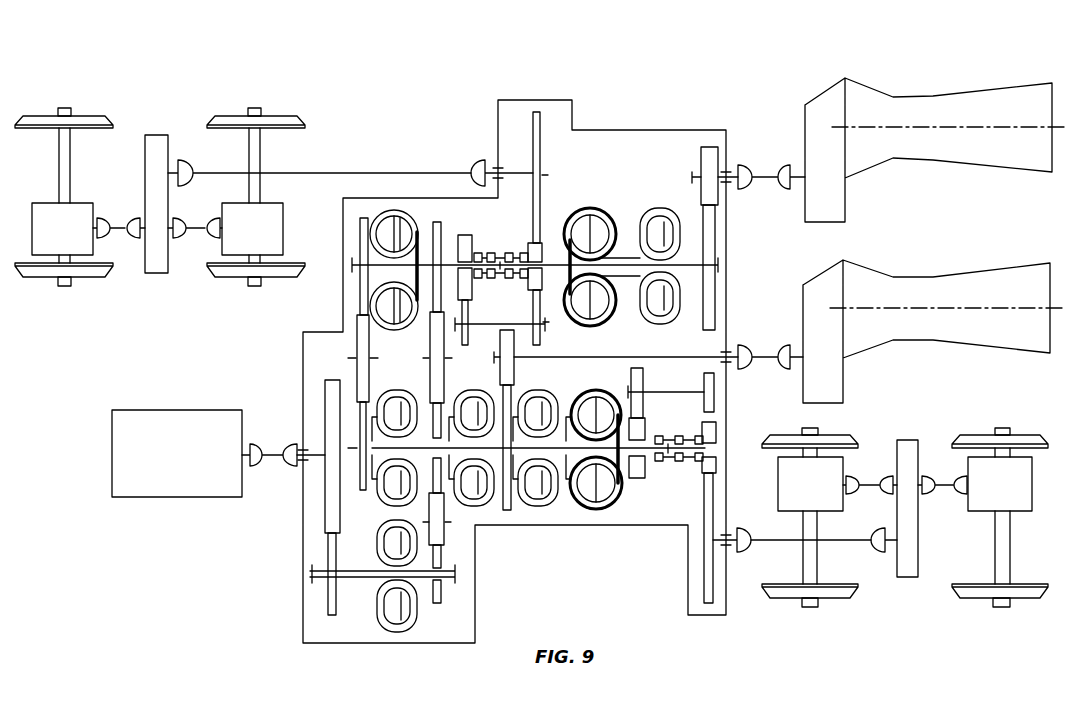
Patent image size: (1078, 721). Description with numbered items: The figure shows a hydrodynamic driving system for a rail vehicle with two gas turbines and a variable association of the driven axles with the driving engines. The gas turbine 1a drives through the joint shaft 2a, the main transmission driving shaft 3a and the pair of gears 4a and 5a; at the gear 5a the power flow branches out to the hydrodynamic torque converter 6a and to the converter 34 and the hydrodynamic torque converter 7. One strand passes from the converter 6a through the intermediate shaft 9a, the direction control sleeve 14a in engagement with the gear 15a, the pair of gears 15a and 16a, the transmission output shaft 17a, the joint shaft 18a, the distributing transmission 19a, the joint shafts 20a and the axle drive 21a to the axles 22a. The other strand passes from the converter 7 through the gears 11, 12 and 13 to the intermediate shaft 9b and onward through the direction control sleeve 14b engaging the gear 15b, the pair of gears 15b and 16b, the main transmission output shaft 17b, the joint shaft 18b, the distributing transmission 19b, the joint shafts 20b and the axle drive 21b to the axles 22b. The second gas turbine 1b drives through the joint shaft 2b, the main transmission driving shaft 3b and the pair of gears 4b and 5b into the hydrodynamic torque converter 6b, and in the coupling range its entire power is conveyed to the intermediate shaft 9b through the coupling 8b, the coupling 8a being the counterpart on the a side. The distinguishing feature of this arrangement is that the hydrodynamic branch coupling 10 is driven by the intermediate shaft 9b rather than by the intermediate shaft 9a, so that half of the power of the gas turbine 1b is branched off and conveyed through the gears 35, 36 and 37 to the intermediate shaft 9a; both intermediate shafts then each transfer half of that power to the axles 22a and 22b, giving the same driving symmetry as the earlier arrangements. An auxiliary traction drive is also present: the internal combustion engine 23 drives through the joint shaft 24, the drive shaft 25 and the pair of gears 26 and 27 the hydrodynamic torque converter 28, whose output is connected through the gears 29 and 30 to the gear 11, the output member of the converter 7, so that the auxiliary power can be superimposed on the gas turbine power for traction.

The gas turbine 1a is at (991, 287).
The gas turbine 1b is at (960, 112).
The joint shaft 2a is at (768, 355).
The joint shaft 2b is at (775, 170).
The main transmission driving shaft 3a is at (616, 356).
The main transmission driving shaft 3b is at (740, 165).
The gear 4a is at (507, 362).
The gear 4b is at (712, 158).
The gear 5a is at (508, 508).
The gear 5b is at (709, 233).
The hydrodynamic torque converter 6a is at (545, 495).
The hydrodynamic torque converter 6b is at (662, 223).
The hydrodynamic torque converter 7 is at (478, 493).
The coupling 8a is at (588, 500).
The coupling 8b is at (598, 217).
The intermediate shaft 9a is at (622, 460).
The intermediate shaft 9b is at (553, 266).
The hydrodynamic branch coupling 10 is at (388, 208).
The gear 11 is at (437, 432).
The gear 12 is at (430, 345).
The gear 13 is at (436, 222).
The direction control sleeve 14a is at (682, 462).
The direction control sleeve 14b is at (472, 234).
The gear 15a is at (706, 430).
The gear 15b is at (541, 253).
The gear 16a is at (718, 482).
The gear 16b is at (536, 112).
The transmission output shaft 17a is at (732, 532).
The main transmission output shaft 17b is at (487, 160).
The joint shaft 18a is at (778, 541).
The joint shaft 18b is at (202, 170).
The distributing transmission 19a is at (908, 448).
The distributing transmission 19b is at (153, 145).
The joint shafts 20a is at (872, 480).
The joint shafts 20b is at (118, 225).
The axle drive 21a is at (846, 468).
The axle drive 21b is at (85, 228).
The axles 22a is at (815, 557).
The axles 22b is at (65, 107).
The internal combustion engine 23 is at (148, 420).
The joint shaft 24 is at (272, 447).
The drive shaft 25 is at (317, 455).
The gear 26 is at (333, 395).
The gear 27 is at (330, 602).
The hydrodynamic torque converter 28 is at (395, 624).
The gear 29 is at (440, 595).
The gear 30 is at (437, 537).
The converter 34 is at (398, 400).
The gear 35 is at (362, 218).
The gear 36 is at (348, 326).
The gear 37 is at (363, 492).